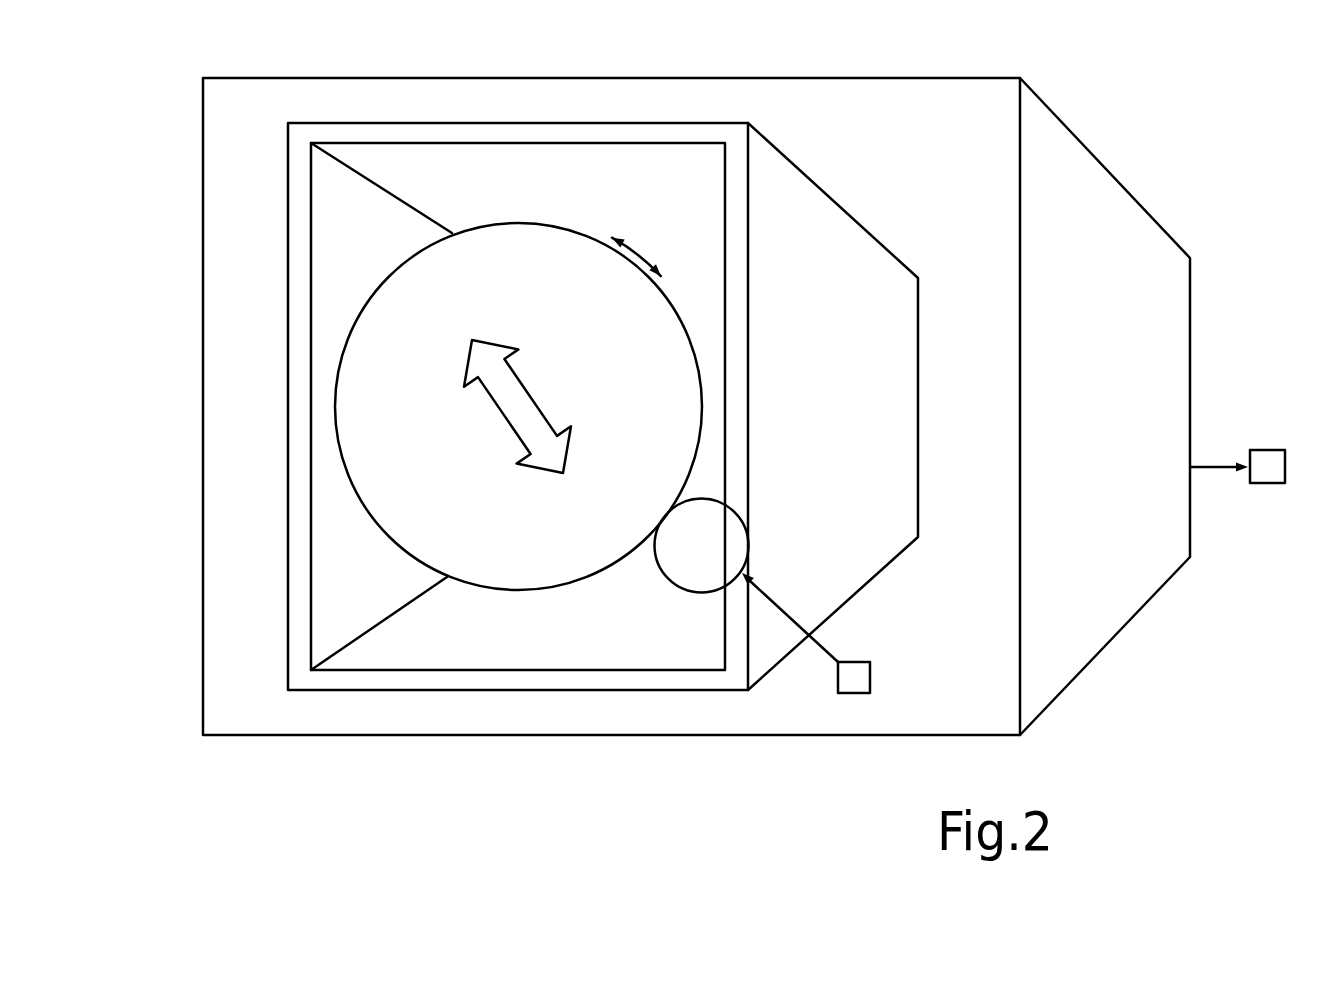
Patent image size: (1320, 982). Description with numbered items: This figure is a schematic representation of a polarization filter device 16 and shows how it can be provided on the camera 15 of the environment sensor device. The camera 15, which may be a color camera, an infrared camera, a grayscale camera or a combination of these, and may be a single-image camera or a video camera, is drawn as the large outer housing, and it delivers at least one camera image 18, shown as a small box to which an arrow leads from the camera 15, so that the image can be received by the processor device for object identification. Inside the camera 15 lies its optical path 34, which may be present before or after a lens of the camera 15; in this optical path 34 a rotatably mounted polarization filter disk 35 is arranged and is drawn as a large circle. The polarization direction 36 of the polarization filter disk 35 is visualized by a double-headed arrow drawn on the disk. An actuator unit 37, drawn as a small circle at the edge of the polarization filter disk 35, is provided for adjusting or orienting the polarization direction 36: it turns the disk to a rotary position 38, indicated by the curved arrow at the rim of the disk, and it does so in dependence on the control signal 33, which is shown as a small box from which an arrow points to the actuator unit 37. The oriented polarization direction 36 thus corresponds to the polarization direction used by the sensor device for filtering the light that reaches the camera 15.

The camera 15 is at (828, 78).
The polarization filter device 16 is at (337, 589).
The camera image 18 is at (1266, 450).
The control signal 33 is at (871, 675).
The optical path 34 is at (288, 295).
The polarization filter disk 35 is at (565, 229).
The polarization direction 36 is at (532, 390).
The actuator unit 37 is at (737, 512).
The rotary position 38 is at (645, 251).